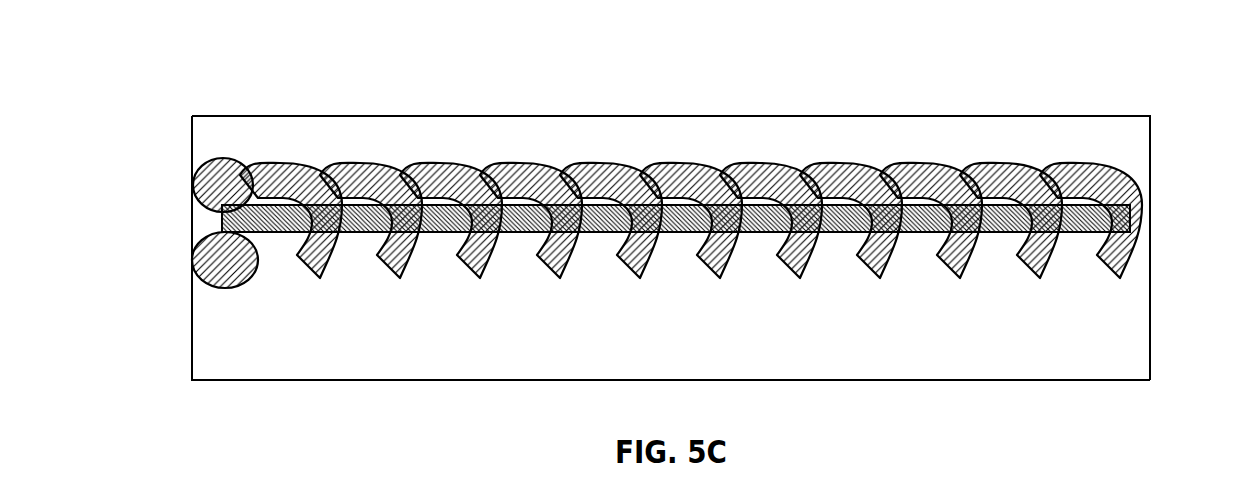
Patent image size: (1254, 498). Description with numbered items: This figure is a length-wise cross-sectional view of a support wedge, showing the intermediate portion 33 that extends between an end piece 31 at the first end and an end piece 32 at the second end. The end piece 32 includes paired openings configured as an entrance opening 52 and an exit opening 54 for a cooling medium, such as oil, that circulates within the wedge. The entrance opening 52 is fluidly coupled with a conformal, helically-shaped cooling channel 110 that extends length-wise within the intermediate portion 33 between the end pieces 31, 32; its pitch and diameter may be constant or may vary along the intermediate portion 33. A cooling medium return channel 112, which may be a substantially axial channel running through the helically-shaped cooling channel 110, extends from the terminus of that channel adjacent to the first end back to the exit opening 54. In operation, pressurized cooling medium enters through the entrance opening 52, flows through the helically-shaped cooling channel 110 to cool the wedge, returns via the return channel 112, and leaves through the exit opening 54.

The intermediate portion 33 is at (795, 42).
The end piece 31 is at (1150, 168).
The end piece 32 is at (190, 350).
The entrance opening 52 is at (194, 195).
The exit opening 54 is at (193, 270).
The helically-shaped cooling channel 110 is at (292, 178).
The cooling medium return channel 112 is at (370, 218).